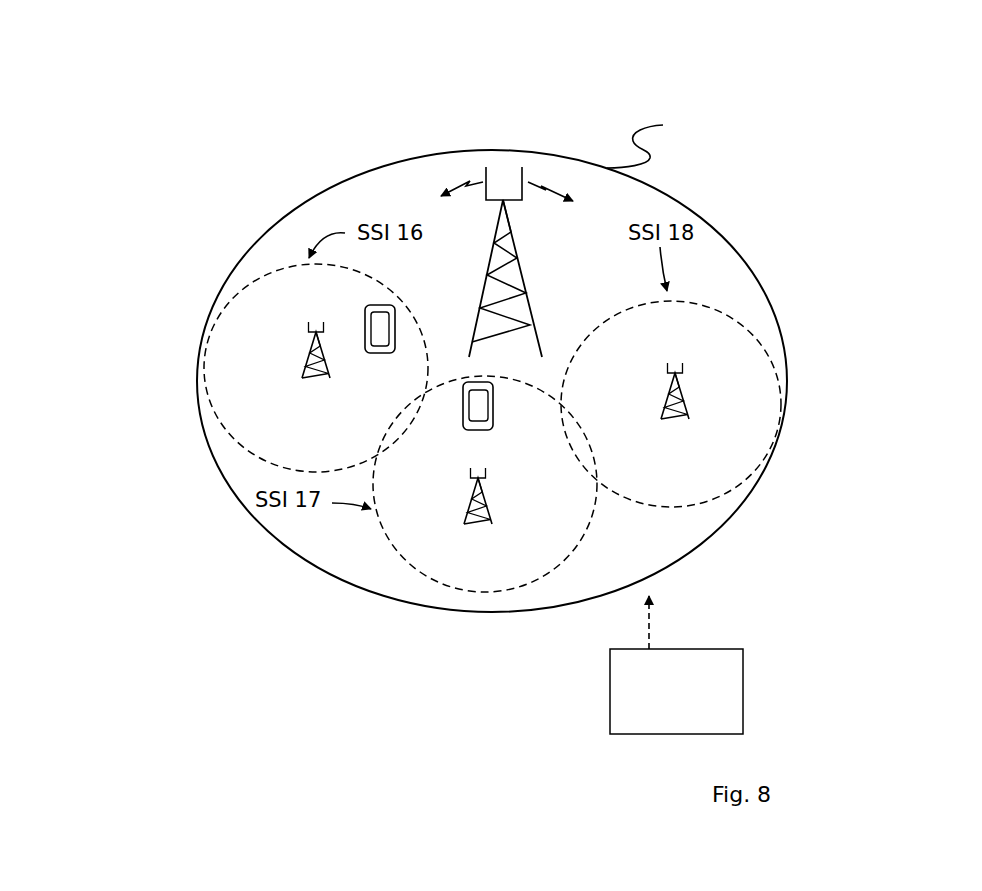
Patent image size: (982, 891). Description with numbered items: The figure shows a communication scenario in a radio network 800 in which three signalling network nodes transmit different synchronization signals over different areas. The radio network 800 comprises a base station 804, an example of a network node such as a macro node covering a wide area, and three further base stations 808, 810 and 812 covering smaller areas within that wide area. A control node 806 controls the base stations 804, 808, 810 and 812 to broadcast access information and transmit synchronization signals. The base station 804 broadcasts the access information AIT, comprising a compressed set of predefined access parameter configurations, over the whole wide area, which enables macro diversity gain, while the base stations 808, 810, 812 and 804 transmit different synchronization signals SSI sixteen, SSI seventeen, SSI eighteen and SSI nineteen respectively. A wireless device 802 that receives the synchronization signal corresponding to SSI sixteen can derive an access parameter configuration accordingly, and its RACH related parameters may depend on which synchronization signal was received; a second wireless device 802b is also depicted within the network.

The radio network 800 is at (180, 231).
The wireless device 802 is at (395, 322).
The wireless device 802b is at (493, 410).
The base station 804 is at (528, 293).
The control node 806 is at (610, 690).
The base station 808 is at (310, 347).
The base station 810 is at (472, 495).
The base station 812 is at (670, 388).